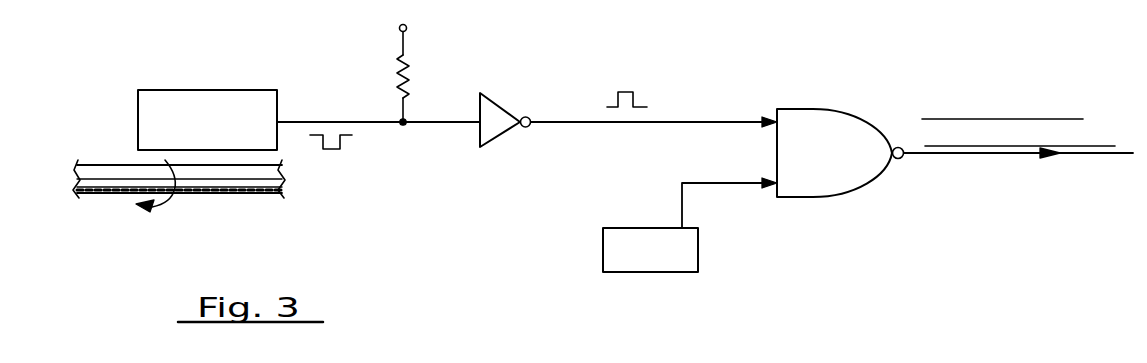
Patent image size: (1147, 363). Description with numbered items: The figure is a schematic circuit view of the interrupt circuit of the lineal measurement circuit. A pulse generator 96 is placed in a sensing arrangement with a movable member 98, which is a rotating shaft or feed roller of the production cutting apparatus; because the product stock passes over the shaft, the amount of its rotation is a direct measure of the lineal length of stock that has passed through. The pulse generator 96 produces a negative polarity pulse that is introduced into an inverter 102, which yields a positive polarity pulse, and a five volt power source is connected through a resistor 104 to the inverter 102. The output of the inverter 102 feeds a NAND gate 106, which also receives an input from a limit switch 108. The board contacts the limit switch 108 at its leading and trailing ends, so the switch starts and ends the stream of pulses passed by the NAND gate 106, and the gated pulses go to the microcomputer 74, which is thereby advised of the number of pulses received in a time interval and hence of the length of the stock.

The pulse generator 96 is at (262, 100).
The movable member 98 is at (93, 190).
The inverter 102 is at (494, 100).
The resistor 104 is at (400, 82).
The NAND gate 106 is at (822, 125).
The limit switch 108 is at (663, 232).
The microcomputer 74 is at (1018, 128).